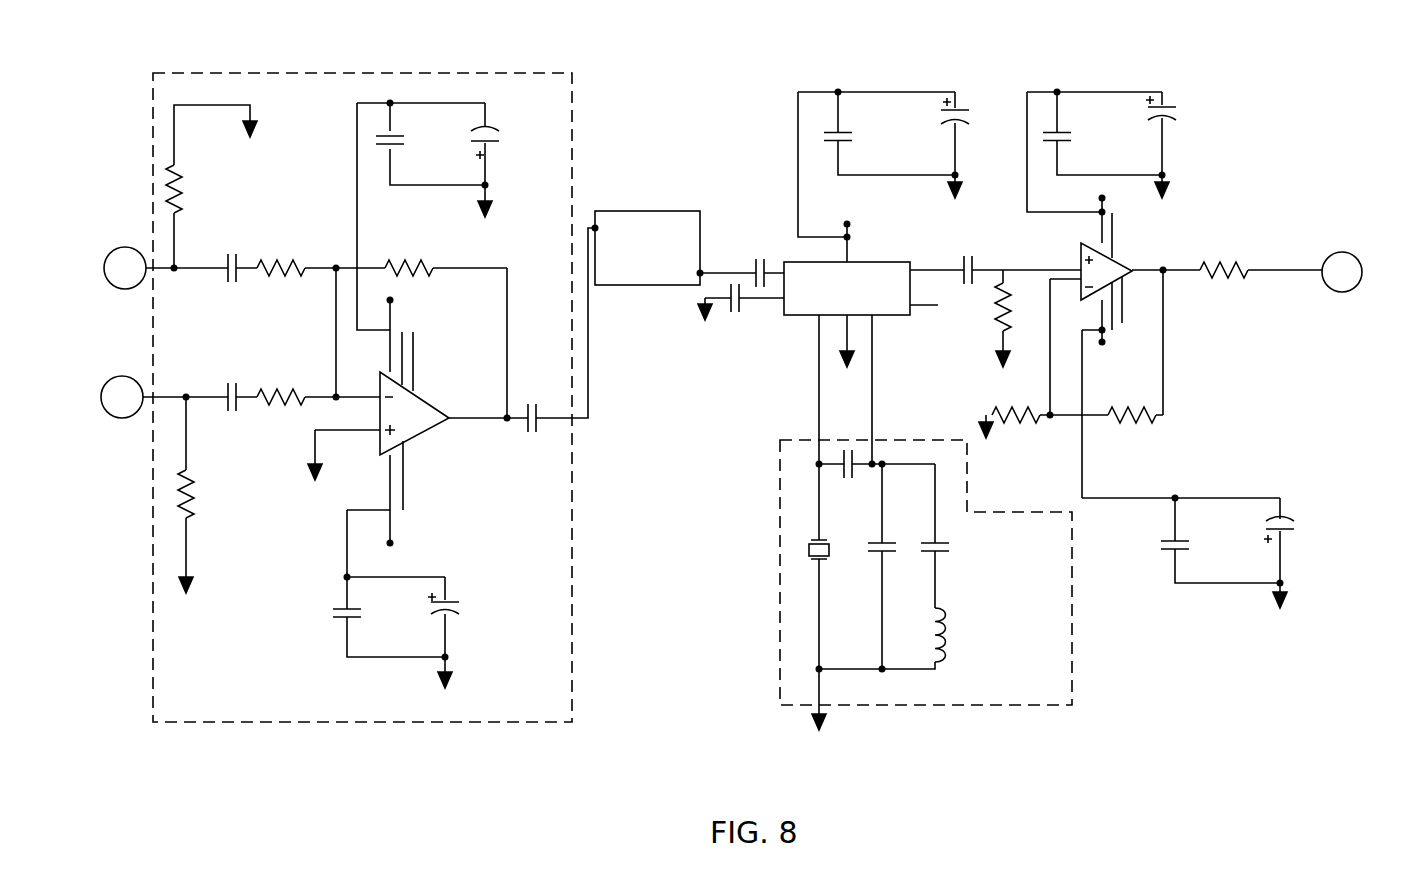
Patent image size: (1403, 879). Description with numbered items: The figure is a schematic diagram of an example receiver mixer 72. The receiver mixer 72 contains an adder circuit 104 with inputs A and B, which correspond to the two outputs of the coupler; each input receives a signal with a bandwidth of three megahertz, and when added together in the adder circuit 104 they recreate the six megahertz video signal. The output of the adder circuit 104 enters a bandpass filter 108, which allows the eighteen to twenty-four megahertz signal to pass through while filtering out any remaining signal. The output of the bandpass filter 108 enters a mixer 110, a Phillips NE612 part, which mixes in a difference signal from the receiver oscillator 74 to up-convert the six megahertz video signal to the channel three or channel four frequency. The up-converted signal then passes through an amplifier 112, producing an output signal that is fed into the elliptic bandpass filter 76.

The adder circuit 104 is at (560, 87).
The bandpass filter 108 is at (612, 210).
The mixer 110 is at (862, 273).
The amplifier 112 is at (1117, 267).
The receiver oscillator 74 is at (1060, 693).
The receiver mixer 72 is at (1226, 638).
The elliptic bandpass filter 76 is at (1325, 287).